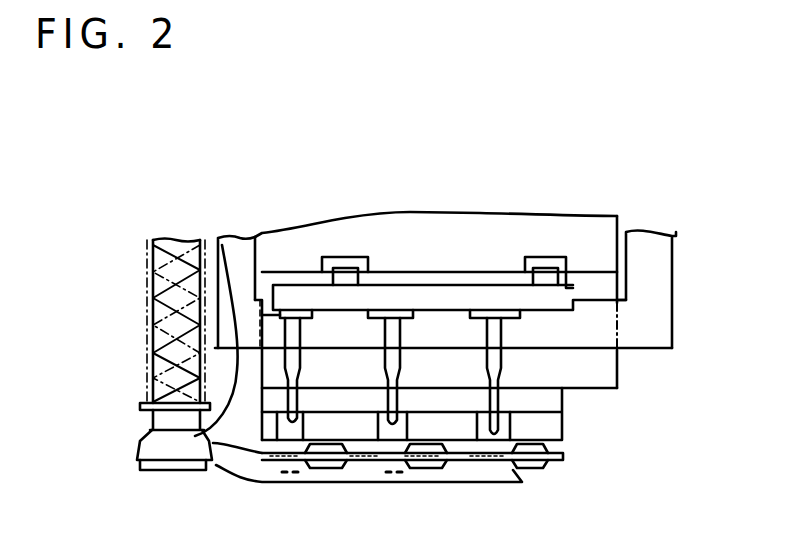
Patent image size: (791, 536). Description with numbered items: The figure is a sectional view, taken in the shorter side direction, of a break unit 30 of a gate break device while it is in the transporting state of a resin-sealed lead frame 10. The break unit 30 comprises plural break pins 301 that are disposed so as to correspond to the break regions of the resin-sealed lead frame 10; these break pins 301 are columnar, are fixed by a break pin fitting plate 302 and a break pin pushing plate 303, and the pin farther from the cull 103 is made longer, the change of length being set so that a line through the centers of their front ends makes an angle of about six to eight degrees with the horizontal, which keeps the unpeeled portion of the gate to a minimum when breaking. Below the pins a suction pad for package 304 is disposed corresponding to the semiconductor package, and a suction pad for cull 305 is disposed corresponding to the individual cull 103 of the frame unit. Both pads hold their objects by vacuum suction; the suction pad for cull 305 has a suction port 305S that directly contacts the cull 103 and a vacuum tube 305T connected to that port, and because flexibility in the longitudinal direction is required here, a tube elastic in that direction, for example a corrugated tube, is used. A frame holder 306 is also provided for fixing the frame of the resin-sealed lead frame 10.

The resin-sealed lead frame 10 is at (226, 470).
The break unit 30 is at (627, 208).
The cull 103 is at (140, 458).
The break pin 301 is at (562, 393).
The break pin fitting plate 302 is at (660, 312).
The break pin pushing plate 303 is at (443, 300).
The suction pad for package 304 is at (550, 447).
The suction pad for cull 305 is at (235, 170).
The vacuum tube 305T is at (150, 267).
The suction port 305S is at (222, 245).
The frame holder 306 is at (563, 426).